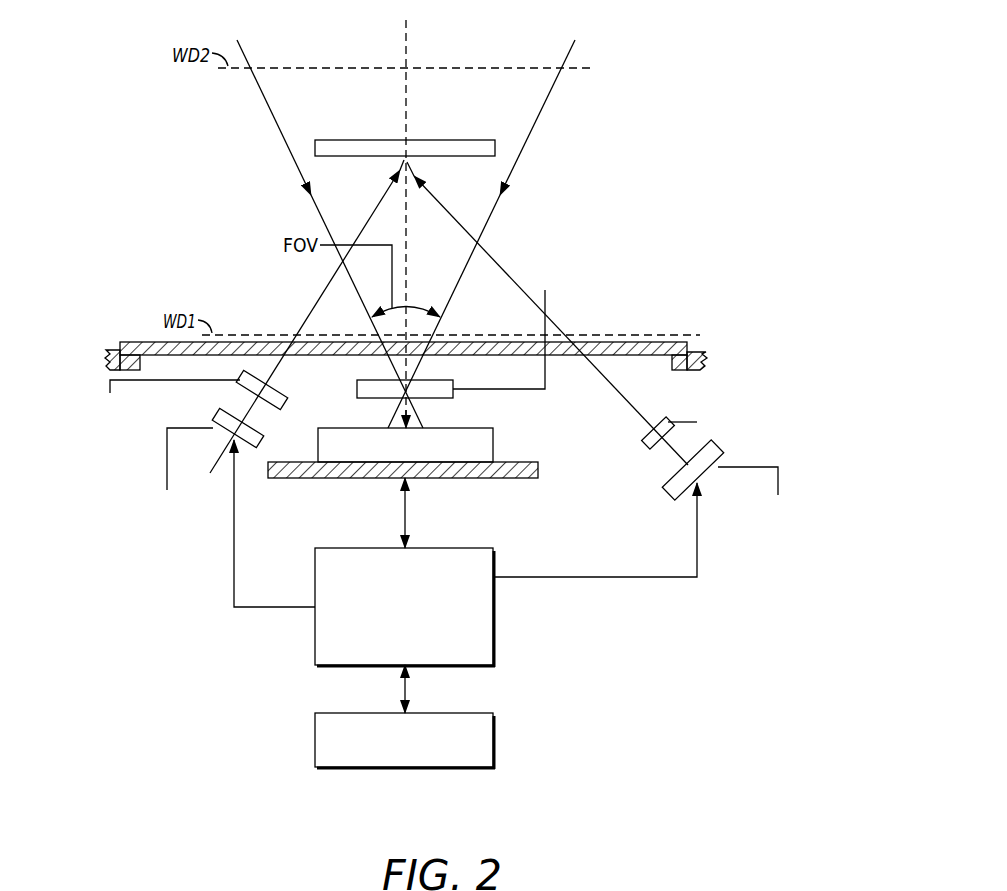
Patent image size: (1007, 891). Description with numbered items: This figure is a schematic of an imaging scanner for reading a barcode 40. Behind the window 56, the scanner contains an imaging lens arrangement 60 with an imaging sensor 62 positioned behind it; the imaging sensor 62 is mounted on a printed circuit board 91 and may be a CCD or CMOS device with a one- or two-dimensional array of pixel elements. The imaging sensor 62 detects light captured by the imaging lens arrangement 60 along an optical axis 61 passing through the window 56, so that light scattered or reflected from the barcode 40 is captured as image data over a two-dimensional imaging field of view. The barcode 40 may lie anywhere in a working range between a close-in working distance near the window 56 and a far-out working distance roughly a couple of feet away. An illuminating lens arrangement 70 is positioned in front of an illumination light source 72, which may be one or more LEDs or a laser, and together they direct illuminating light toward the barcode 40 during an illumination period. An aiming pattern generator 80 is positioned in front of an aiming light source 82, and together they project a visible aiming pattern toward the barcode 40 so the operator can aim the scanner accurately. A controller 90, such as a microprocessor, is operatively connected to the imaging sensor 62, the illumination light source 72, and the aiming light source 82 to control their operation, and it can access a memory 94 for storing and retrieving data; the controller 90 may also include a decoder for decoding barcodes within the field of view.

The barcode 40 is at (463, 140).
The window 56 is at (130, 342).
The imaging lens arrangement 60 is at (357, 389).
The optical axis 61 is at (408, 40).
The imaging sensor 62 is at (480, 428).
The illuminating lens arrangement 70 is at (785, 386).
The illumination light source 72 is at (783, 562).
The aiming pattern generator 80 is at (84, 393).
The aiming light source 82 is at (162, 534).
The controller 90 is at (480, 546).
The printed circuit board 91 is at (455, 480).
The memory 94 is at (480, 712).